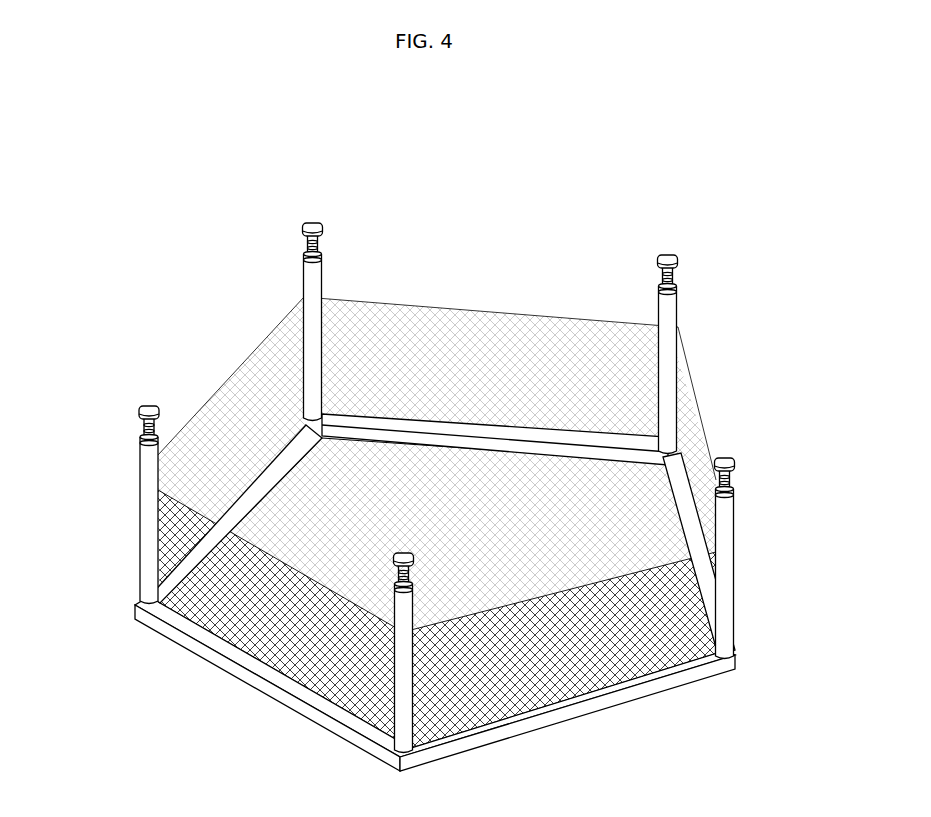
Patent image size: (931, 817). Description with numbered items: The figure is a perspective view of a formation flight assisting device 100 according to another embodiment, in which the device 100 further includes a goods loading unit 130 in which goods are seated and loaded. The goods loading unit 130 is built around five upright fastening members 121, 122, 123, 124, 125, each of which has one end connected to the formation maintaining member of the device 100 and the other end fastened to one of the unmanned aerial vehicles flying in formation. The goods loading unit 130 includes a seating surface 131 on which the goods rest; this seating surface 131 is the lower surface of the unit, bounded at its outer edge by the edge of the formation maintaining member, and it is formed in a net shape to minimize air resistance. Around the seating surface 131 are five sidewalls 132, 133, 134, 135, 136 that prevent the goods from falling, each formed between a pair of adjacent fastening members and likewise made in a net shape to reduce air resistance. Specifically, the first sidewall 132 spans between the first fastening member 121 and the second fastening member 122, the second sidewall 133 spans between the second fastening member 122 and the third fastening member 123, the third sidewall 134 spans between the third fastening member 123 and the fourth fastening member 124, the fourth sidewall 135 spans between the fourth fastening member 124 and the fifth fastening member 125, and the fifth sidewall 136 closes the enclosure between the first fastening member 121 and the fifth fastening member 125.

The formation flight assisting device 100 is at (705, 190).
The first fastening member 121 is at (140, 460).
The second fastening member 122 is at (303, 270).
The third fastening member 123 is at (677, 298).
The fourth fastening member 124 is at (734, 505).
The fifth fastening member 125 is at (407, 687).
The goods loading unit 130 is at (415, 537).
The seating surface 131 is at (398, 460).
The first sidewall 132 is at (217, 400).
The second sidewall 133 is at (447, 308).
The third sidewall 134 is at (688, 372).
The fourth sidewall 135 is at (553, 597).
The fifth sidewall 136 is at (347, 610).